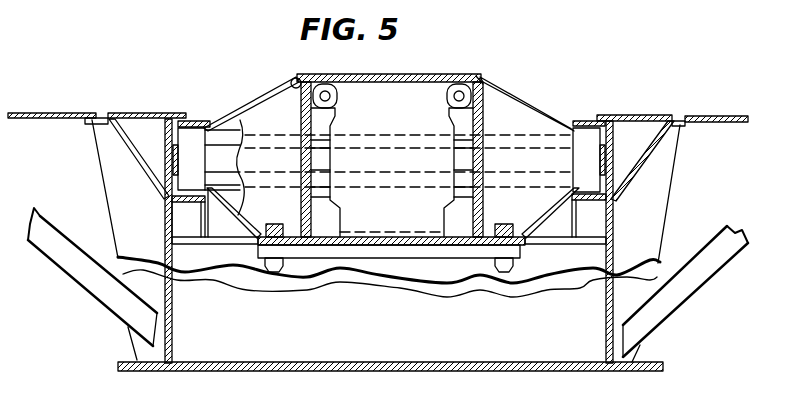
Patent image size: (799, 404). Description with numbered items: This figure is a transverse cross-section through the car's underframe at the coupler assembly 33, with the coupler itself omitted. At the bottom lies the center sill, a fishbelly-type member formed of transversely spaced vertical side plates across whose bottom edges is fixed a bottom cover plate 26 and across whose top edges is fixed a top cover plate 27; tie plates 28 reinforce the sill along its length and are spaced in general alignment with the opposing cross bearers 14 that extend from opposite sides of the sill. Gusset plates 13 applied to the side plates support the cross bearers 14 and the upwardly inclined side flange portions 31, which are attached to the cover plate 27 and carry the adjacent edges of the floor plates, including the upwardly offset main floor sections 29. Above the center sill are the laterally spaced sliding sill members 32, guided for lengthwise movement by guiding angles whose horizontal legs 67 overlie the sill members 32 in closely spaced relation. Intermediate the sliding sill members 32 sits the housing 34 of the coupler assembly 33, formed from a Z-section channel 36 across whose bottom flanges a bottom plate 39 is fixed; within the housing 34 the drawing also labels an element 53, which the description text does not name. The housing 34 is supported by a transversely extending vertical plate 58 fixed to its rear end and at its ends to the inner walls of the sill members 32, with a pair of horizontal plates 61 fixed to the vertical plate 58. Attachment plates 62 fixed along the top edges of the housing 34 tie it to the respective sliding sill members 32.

The gusset plate 13 is at (112, 190).
The cross bearer 14 is at (75, 278).
The bottom cover plate 26 is at (470, 372).
The top cover plate 27 is at (200, 242).
The tie plate 28 is at (535, 348).
The floor section 29 is at (78, 102).
The side flange portion 31 is at (125, 150).
The sliding sill member 32 is at (204, 137).
The coupler assembly 33 is at (438, 74).
The housing 34 is at (481, 79).
The Z-section channel 36 is at (297, 77).
The bottom plate 39 is at (357, 252).
The pillar 53 is at (455, 122).
The vertical plate 58 is at (292, 222).
The horizontal plate 61 is at (233, 140).
The attachment plate 62 is at (256, 100).
The horizontal leg 67 is at (588, 122).